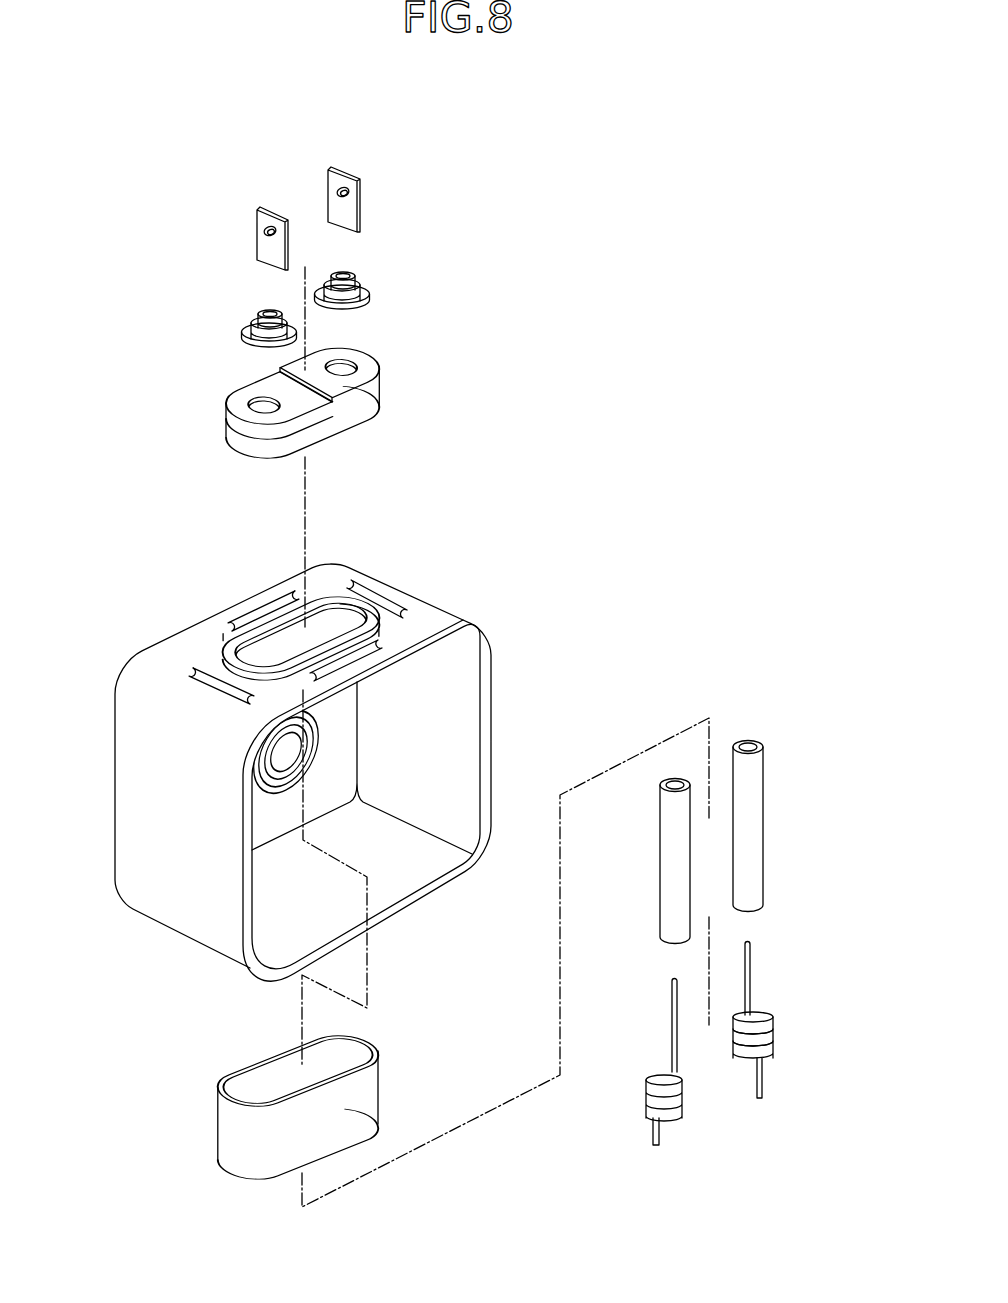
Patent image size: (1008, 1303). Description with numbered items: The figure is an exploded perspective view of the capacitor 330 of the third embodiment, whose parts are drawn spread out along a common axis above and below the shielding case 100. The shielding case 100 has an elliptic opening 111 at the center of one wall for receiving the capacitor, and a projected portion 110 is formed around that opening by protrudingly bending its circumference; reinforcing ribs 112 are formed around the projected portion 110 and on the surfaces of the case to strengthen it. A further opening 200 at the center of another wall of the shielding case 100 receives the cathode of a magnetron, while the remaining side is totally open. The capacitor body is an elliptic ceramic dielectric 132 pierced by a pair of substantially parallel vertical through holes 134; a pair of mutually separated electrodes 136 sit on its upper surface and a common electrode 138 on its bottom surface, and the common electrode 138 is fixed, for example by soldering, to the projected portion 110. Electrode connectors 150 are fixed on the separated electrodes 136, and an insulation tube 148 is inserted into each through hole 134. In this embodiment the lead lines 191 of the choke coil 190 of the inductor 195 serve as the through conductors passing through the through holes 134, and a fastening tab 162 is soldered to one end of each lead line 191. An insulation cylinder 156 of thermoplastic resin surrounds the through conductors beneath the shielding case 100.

The shielding case 100 is at (494, 739).
The projected portion 110 is at (375, 600).
The elliptic opening 111 is at (327, 616).
The reinforcing ribs 112 is at (243, 620).
The ceramic dielectric 132 is at (240, 437).
The through holes 134 is at (242, 398).
The separated electrodes 136 is at (228, 402).
The common electrode 138 is at (273, 458).
The insulation tube 148 is at (757, 845).
The electrode connectors 150 is at (243, 323).
The insulation cylinder 156 is at (362, 1112).
The fastening tab 162 is at (257, 210).
The choke coil 190 is at (782, 1032).
The lead lines 191 is at (672, 997).
The inductor 195 is at (763, 1013).
The opening 200 is at (260, 763).
The capacitor 330 is at (413, 316).